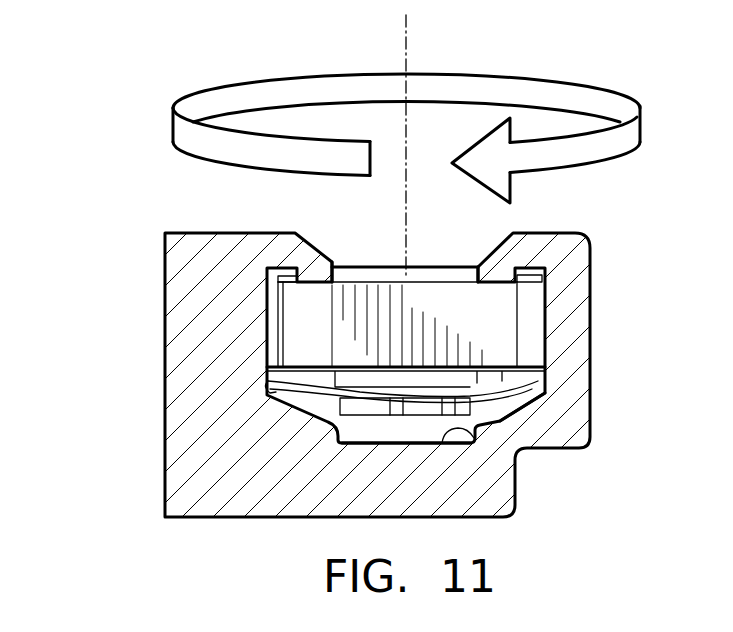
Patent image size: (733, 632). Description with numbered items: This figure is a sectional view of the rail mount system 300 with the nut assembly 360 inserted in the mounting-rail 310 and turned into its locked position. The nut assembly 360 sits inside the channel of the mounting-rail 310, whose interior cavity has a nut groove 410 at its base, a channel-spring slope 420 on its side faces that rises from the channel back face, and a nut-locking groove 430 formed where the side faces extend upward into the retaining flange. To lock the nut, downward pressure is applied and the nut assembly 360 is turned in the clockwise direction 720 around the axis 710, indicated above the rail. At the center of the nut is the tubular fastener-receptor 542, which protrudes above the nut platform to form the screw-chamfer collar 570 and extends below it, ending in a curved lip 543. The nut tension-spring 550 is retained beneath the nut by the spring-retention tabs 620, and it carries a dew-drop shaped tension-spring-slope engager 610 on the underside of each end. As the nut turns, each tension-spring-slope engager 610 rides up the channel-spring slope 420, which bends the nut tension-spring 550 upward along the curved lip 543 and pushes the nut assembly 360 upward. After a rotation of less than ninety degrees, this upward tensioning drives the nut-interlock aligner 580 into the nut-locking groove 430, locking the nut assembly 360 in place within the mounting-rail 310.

The rail mount system 300 is at (170, 57).
The mounting-rail 310 is at (150, 190).
The nut assembly 360 is at (460, 246).
The nut groove 410 is at (478, 443).
The channel-spring slope 420 is at (532, 410).
The nut-locking groove 430 is at (590, 244).
The fastener-receptor 542 is at (397, 270).
The curved lip 543 is at (499, 378).
The nut tension-spring 550 is at (527, 392).
The screw-chamfer collar 570 is at (388, 280).
The nut-interlock aligner 580 is at (530, 276).
The tension-spring-slope engager 610 is at (535, 400).
The spring-retention tab 620 is at (425, 410).
The axis 710 is at (405, 24).
The clockwise direction 720 is at (642, 125).